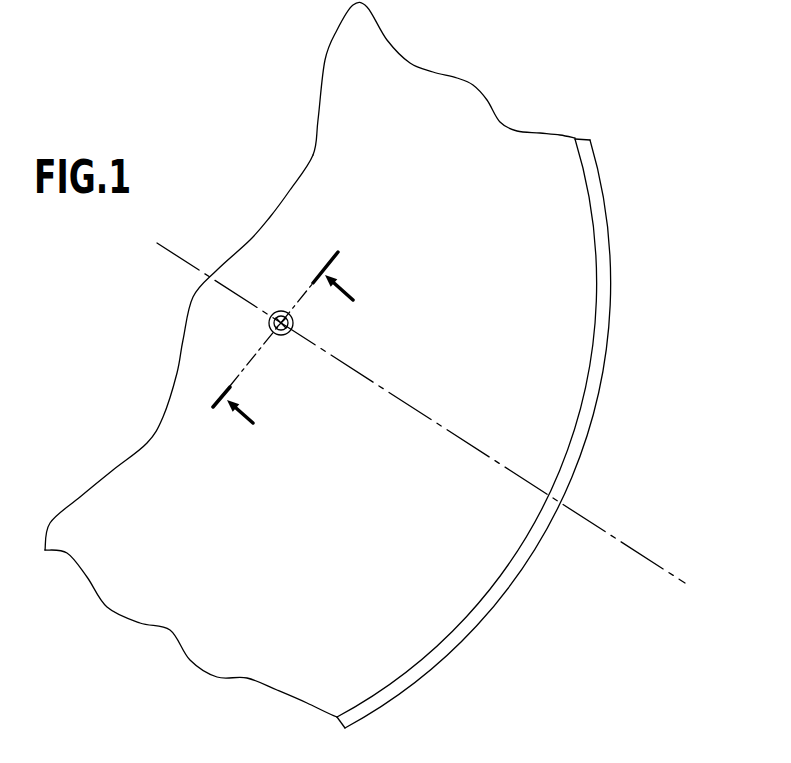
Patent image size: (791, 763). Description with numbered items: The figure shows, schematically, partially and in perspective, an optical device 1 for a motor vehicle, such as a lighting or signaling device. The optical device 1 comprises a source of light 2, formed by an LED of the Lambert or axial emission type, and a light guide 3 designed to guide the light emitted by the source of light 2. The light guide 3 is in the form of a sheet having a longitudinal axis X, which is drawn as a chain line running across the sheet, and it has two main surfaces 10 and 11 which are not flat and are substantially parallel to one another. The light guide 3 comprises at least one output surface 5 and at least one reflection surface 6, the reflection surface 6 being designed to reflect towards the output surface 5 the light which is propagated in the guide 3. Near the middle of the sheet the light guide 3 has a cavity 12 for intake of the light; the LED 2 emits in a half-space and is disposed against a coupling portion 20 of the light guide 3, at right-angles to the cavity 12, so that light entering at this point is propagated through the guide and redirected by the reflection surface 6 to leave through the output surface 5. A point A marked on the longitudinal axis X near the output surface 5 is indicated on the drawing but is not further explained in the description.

The optical device 1 is at (630, 186).
The source of light 2 is at (290, 319).
The light guide 3 is at (573, 282).
The output surface 5 is at (589, 380).
The reflection surface 6 is at (281, 200).
The main surface 10 is at (435, 102).
The main surface 11 is at (597, 165).
The cavity 12 is at (283, 335).
The coupling portion 20 is at (240, 323).
The point A on axis A is at (600, 529).
The longitudinal axis X is at (638, 552).